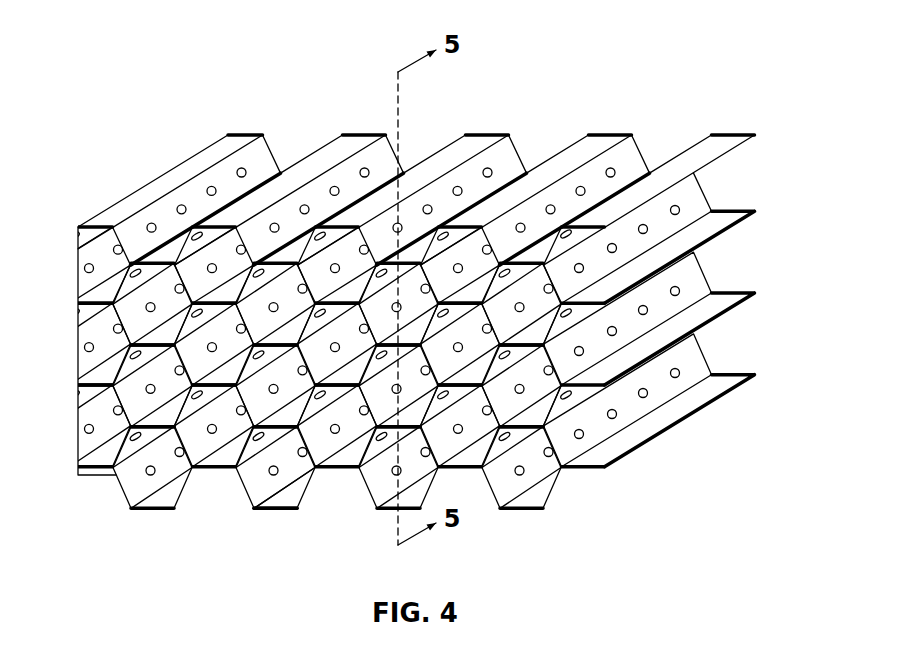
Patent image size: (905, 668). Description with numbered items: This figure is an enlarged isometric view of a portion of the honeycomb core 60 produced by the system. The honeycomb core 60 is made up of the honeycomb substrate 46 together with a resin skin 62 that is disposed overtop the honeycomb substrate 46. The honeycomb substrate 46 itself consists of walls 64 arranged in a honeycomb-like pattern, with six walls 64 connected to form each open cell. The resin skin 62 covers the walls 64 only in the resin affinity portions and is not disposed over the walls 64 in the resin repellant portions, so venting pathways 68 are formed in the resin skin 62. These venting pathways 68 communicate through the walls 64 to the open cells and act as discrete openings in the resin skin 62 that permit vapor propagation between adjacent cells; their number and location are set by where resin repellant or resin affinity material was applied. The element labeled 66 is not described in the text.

The honeycomb core 60 is at (716, 69).
The resin skin 62 is at (116, 481).
The walls 64 is at (220, 228).
The cell wall 66 is at (258, 484).
The honeycomb substrate 46 is at (276, 512).
The venting pathways 68 is at (650, 312).